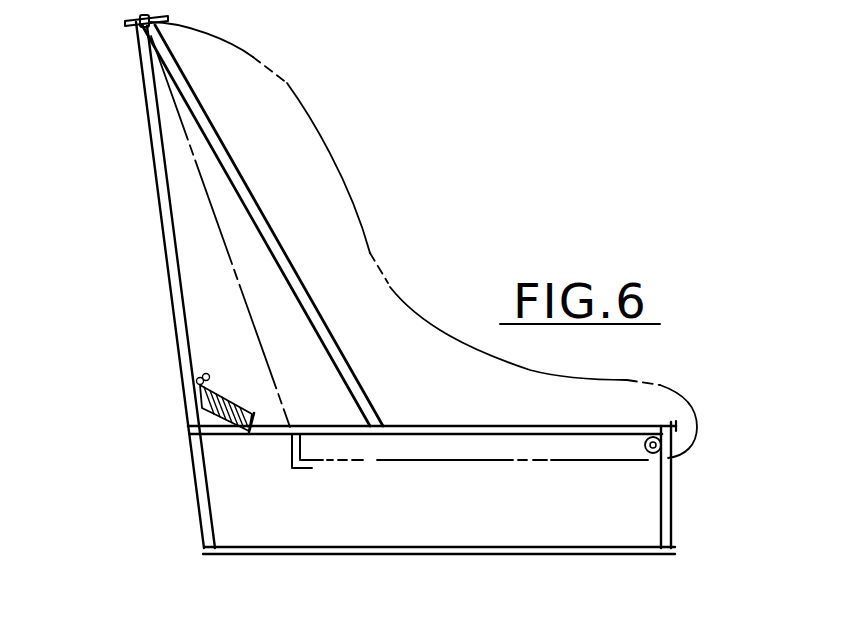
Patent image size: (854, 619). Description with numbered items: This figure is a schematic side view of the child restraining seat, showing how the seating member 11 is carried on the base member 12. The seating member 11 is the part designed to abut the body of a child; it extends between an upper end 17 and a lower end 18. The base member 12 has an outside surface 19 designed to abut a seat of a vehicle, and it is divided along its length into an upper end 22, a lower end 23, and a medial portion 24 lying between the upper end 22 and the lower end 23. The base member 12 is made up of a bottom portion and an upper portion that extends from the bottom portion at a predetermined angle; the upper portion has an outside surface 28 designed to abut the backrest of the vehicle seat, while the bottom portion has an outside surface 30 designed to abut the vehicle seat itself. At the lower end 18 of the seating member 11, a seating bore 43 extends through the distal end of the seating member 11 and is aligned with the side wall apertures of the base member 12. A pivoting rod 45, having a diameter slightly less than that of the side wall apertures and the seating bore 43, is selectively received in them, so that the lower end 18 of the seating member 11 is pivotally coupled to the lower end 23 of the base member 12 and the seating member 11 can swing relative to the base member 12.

The seating member 11 is at (348, 147).
The base member 12 is at (184, 501).
The upper end 17 is at (226, 58).
The lower end 18 is at (670, 403).
The outside surface 19 is at (162, 356).
The upper end 22 is at (138, 35).
The lower end 23 is at (668, 482).
The medial portion 24 is at (228, 438).
The outside surface 28 is at (167, 264).
The outside surface 30 is at (392, 556).
The seating bore 43 is at (655, 438).
The pivoting rod 45 is at (661, 441).